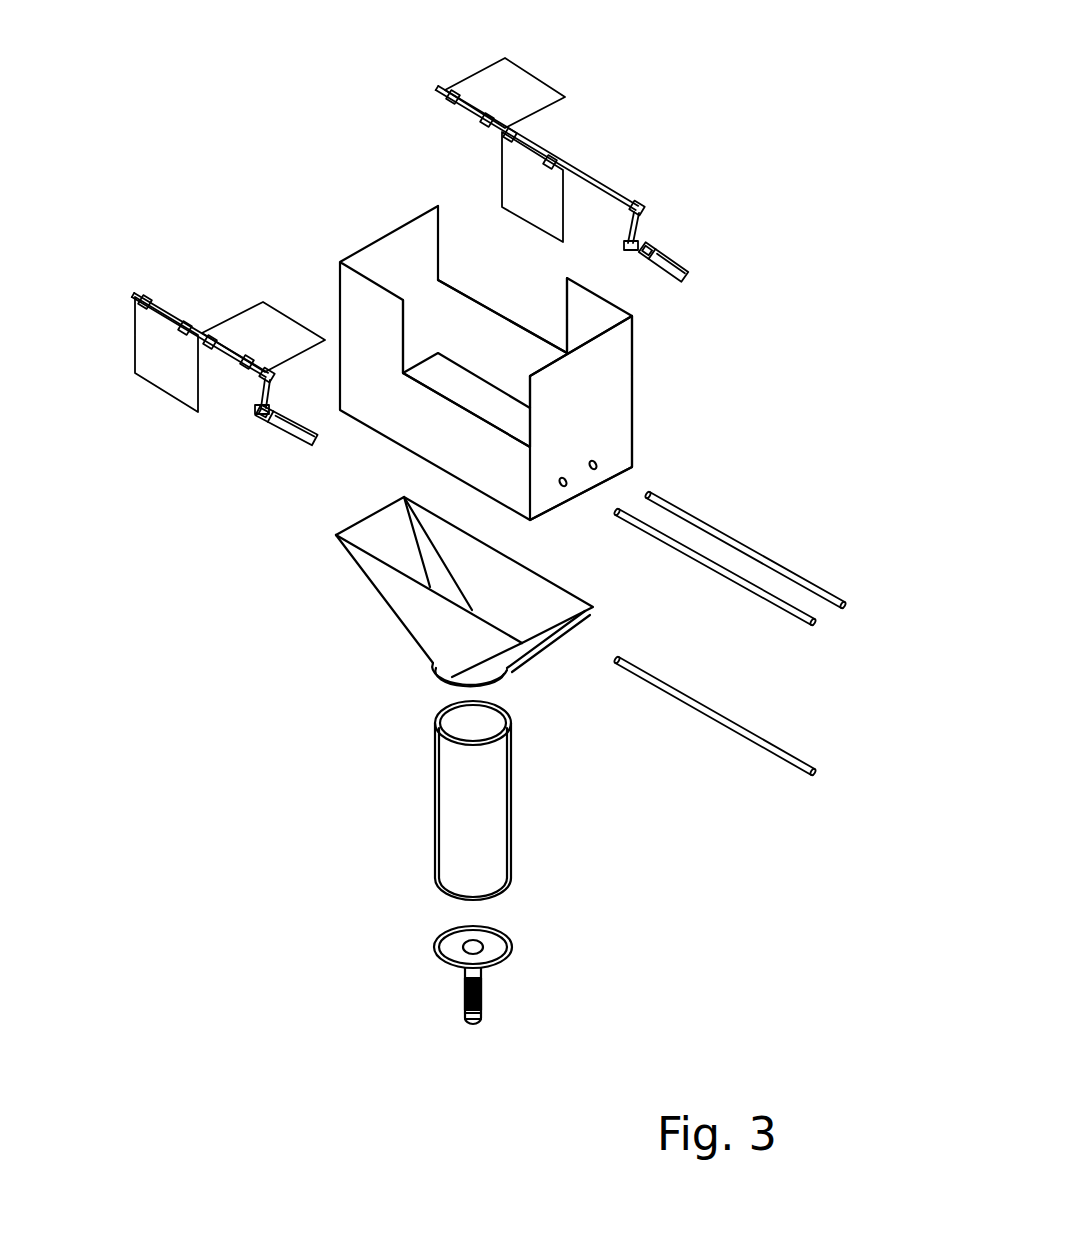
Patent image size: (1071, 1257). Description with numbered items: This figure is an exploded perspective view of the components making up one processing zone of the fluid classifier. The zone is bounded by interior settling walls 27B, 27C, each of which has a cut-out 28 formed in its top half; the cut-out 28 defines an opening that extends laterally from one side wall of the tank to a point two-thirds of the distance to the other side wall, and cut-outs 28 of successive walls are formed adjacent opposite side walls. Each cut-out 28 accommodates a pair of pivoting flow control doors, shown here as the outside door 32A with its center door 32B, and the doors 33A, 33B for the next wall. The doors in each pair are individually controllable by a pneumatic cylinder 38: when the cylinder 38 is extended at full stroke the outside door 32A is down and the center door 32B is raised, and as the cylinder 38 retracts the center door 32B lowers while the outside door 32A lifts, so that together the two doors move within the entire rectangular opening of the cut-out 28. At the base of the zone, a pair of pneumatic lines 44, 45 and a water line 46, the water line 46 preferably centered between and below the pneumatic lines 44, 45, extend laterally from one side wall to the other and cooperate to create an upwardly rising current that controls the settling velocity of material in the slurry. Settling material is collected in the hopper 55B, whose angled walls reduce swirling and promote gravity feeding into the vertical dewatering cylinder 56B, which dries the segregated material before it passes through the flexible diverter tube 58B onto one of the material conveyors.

The interior settling wall 27B is at (357, 295).
The interior settling wall 27C is at (605, 313).
The cut-out 28 is at (405, 335).
The outside door 32A is at (255, 332).
The center door 32B is at (148, 358).
The pivoting flow control door 33A is at (485, 88).
The pivoting flow control door 33B is at (515, 195).
The pneumatic cylinder 38 is at (675, 260).
The pneumatic line 44 is at (833, 593).
The pneumatic line 45 is at (785, 613).
The water line 46 is at (763, 747).
The hopper 55B is at (437, 633).
The dewatering cylinder 56B is at (452, 827).
The diverter tube 58B is at (462, 1000).